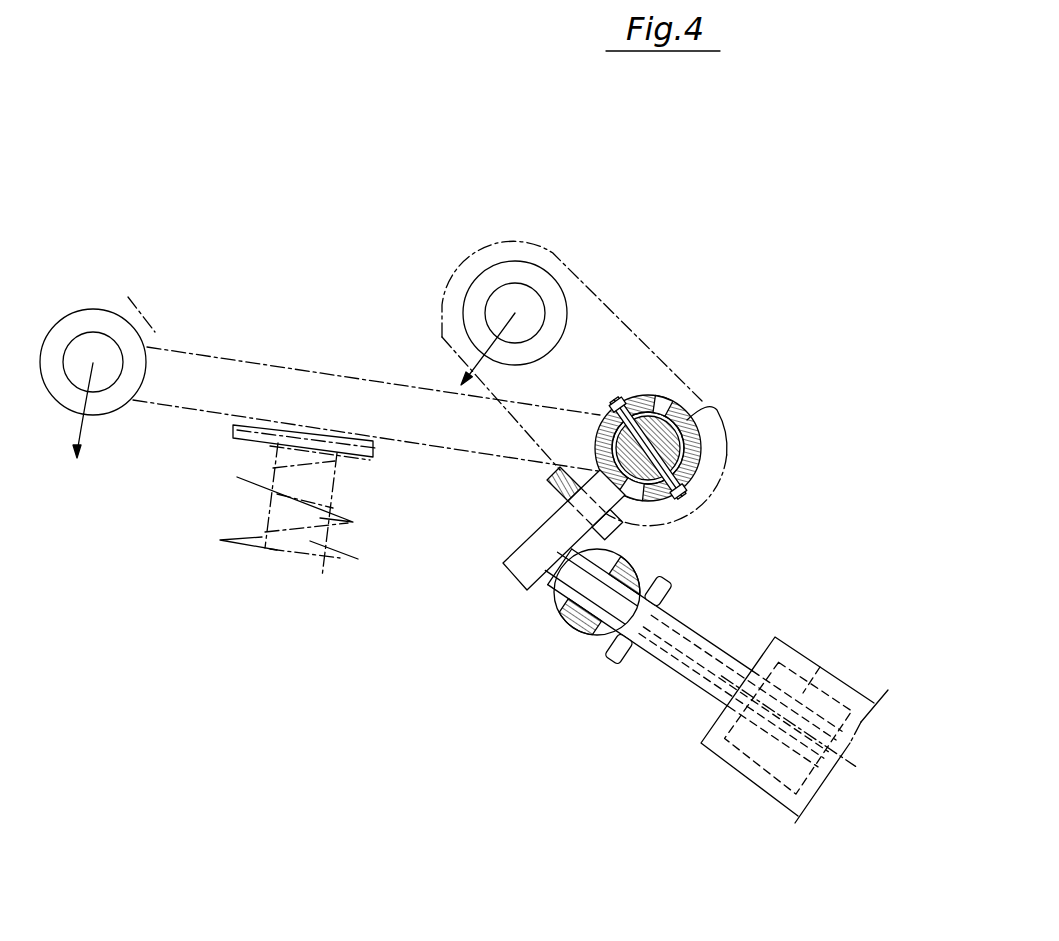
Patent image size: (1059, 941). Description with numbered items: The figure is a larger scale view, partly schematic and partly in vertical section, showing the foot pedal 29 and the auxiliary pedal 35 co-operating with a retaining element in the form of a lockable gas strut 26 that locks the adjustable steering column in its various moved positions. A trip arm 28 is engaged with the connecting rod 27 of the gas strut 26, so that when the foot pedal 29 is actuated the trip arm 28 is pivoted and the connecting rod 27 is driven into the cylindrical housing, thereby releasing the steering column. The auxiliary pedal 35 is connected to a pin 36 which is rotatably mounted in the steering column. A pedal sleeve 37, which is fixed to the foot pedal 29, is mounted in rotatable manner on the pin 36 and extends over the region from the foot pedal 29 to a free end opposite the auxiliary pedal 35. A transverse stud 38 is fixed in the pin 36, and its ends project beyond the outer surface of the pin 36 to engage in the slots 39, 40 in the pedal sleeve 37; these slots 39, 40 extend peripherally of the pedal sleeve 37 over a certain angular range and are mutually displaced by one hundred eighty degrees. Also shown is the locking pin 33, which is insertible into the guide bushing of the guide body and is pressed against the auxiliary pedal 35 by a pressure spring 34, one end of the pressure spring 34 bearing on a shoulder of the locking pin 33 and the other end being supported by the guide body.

The lockable gas strut 26 is at (800, 697).
The connecting rod 27 is at (570, 582).
The trip arm 28 is at (537, 553).
The foot pedal 29 is at (552, 307).
The locking pin 33 is at (310, 542).
The pressure spring 34 is at (258, 488).
The auxiliary pedal 35 is at (173, 368).
The pin 36 is at (698, 453).
The pedal sleeve 37 is at (693, 418).
The transverse stud 38 is at (626, 403).
The slot 39 is at (657, 405).
The slot 40 is at (650, 492).